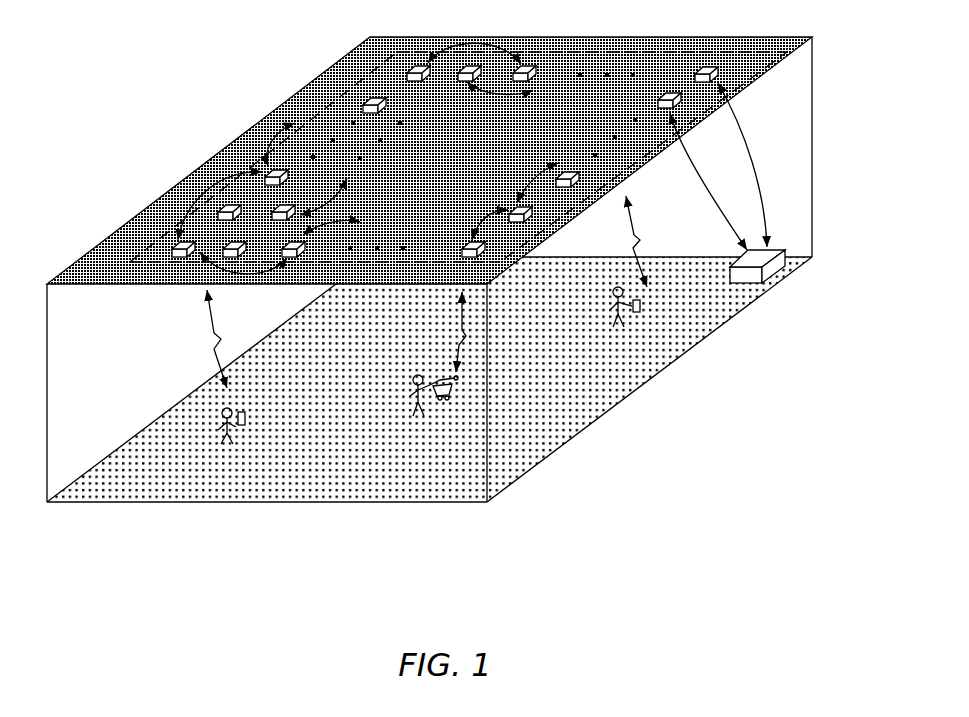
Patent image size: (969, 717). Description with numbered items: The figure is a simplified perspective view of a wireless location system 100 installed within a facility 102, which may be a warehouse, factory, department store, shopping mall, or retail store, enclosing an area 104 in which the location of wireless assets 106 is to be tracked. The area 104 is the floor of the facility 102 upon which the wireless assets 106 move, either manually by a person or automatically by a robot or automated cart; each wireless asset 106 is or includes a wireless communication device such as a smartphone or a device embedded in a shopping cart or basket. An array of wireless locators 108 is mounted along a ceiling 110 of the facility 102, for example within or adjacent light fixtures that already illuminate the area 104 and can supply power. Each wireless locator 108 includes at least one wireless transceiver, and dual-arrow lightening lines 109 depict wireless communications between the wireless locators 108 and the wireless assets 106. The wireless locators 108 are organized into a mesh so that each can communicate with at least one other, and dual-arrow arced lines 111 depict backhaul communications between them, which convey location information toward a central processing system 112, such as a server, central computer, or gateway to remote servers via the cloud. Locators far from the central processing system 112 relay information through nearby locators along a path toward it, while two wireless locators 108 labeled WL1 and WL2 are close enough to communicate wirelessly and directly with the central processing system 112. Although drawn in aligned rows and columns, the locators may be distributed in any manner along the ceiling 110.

The wireless location system 100 is at (783, 97).
The facility 102 is at (106, 502).
The area 104 is at (402, 478).
The wireless assets 106 is at (247, 424).
The wireless locators 108 is at (405, 75).
The dual-arrow lightening lines 109 is at (213, 336).
The ceiling 110 is at (435, 151).
The dual-arrow arced lines 111 is at (485, 47).
The central processing system 112 is at (768, 284).
The wireless locator WL1 is at (685, 68).
The wireless locator WL2 is at (647, 98).